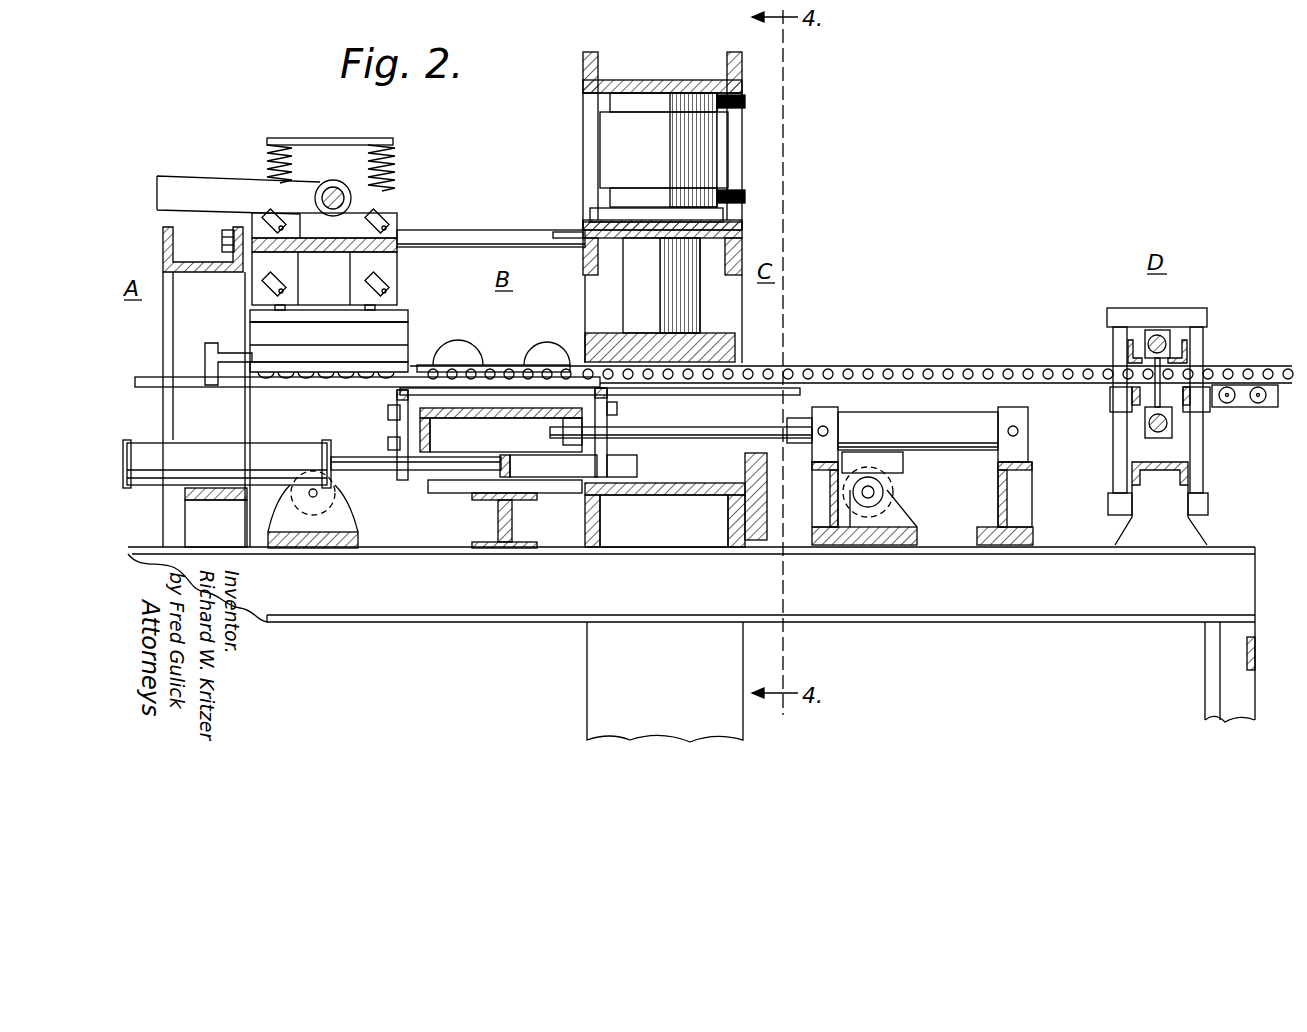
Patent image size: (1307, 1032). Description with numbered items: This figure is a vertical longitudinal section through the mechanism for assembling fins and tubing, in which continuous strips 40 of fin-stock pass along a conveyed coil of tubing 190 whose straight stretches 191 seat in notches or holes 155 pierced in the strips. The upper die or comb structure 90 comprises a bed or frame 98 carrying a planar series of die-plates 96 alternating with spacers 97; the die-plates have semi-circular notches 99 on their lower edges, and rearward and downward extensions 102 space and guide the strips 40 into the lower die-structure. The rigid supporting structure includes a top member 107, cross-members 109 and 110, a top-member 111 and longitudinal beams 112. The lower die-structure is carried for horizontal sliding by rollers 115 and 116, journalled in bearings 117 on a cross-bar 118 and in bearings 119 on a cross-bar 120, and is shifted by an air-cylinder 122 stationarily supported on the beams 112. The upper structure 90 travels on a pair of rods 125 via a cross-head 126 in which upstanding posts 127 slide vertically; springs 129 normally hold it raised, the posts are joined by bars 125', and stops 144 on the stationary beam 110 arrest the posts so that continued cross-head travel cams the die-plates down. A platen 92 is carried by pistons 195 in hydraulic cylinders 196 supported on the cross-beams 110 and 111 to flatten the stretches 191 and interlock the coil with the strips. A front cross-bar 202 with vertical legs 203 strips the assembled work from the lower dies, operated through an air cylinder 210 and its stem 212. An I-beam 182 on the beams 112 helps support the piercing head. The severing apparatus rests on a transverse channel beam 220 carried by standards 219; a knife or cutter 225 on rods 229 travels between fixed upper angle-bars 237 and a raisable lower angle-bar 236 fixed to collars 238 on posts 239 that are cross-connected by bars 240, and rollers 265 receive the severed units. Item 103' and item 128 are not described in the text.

The strips 40 is at (290, 387).
The upper die or comb structure 90 is at (410, 338).
The platen 92 is at (738, 345).
The die-plates 96 is at (330, 360).
The spacers 97 is at (543, 355).
The bed or frame 98 is at (408, 320).
The semi-circular notches 99 is at (365, 372).
The rearward and downward extensions 102 is at (205, 350).
The support stand 103' is at (1021, 503).
The top member 107 is at (190, 272).
The cross-member 109 is at (500, 417).
The cross-member 110 is at (742, 230).
The top-member 111 is at (742, 82).
The longitudinal beams 112 is at (972, 588).
The rollers 115 is at (886, 500).
The rollers 116 is at (355, 497).
The bearings 117 is at (882, 514).
The cross-bar 118 is at (882, 547).
The bearings 119 is at (312, 548).
The cross-bar 120 is at (346, 548).
The air-cylinder 122 is at (920, 434).
The rods 125 is at (621, 324).
The bars 125' is at (341, 128).
The cross-head 126 is at (398, 225).
The upstanding posts 127 is at (395, 170).
The block 128 is at (398, 268).
The springs 129 is at (267, 160).
The stops 144 is at (560, 232).
The notches or holes 155 is at (508, 370).
The I-beam 182 is at (512, 522).
The coil of tubing 190 is at (945, 364).
The straight stretches 191 is at (195, 190).
The pistons 195 is at (662, 293).
The hydraulic cylinders 196 is at (676, 161).
The front cross-bar 202 is at (617, 406).
The vertical legs 203 is at (388, 430).
The air cylinder 210 is at (227, 464).
The stem 212 is at (343, 477).
The standards 219 is at (1165, 505).
The transverse channel beam 220 is at (1135, 466).
The knife or cutter 225 is at (1162, 390).
The rods 229 is at (1157, 338).
The angle-bar 236 is at (1192, 397).
The angle-bars 237 is at (1128, 352).
The collars 238 is at (1115, 395).
The posts 239 is at (1203, 348).
The bars 240 is at (1185, 315).
The rollers 265 is at (1262, 410).